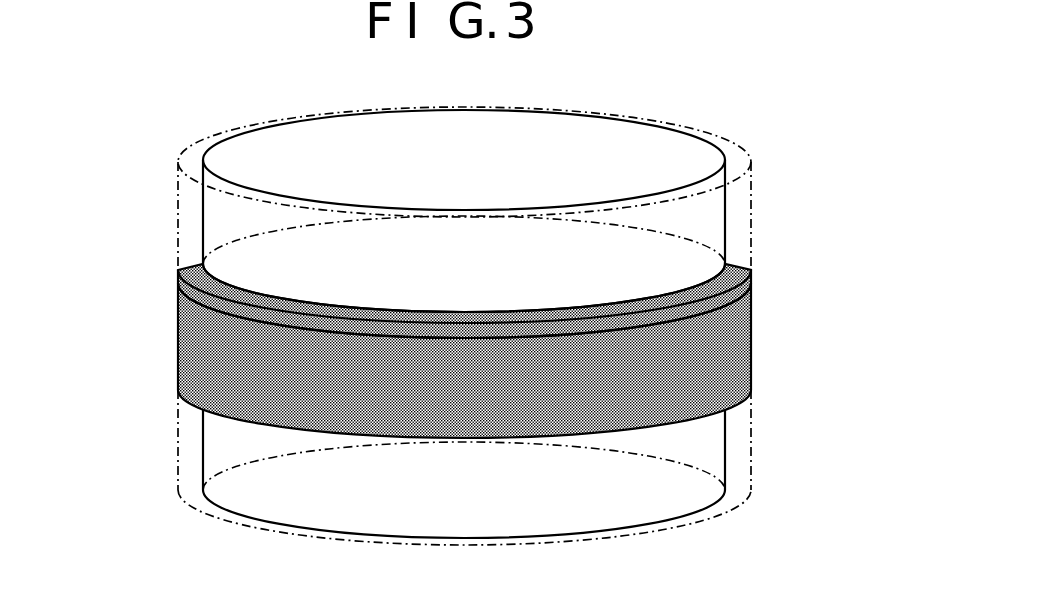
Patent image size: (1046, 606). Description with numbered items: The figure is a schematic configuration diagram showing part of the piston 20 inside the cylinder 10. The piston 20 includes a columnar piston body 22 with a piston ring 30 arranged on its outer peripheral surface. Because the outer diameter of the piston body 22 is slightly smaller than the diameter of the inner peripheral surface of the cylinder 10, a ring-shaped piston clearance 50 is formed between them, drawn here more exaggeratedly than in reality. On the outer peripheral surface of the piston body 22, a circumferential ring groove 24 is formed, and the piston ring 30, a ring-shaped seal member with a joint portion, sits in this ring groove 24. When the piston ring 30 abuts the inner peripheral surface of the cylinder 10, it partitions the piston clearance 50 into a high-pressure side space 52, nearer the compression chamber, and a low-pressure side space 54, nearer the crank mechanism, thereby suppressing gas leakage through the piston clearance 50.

The cylinder 10 is at (178, 216).
The piston 20 is at (436, 324).
The piston body 22 is at (203, 237).
The ring groove 24 is at (722, 289).
The piston ring 30 is at (203, 362).
The piston clearance 50 is at (547, 326).
The high-pressure side space 52 is at (737, 218).
The low-pressure side space 54 is at (732, 437).